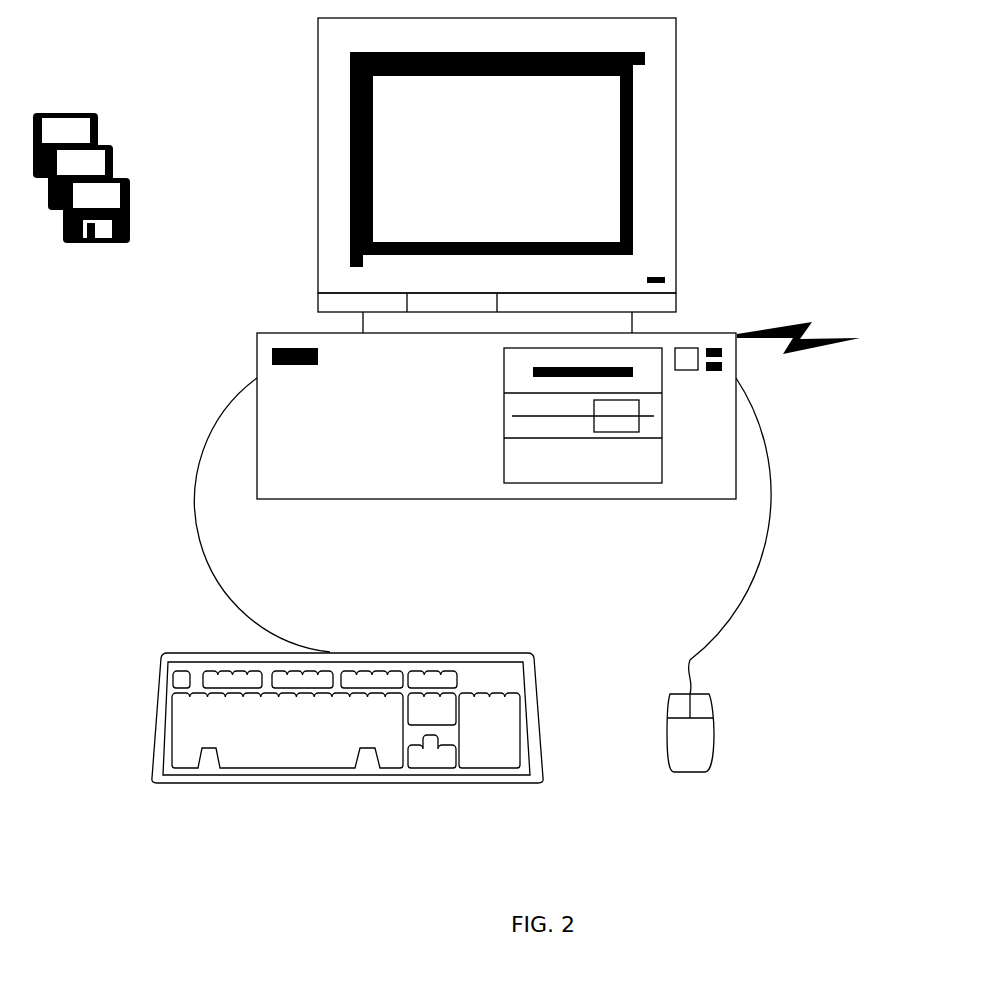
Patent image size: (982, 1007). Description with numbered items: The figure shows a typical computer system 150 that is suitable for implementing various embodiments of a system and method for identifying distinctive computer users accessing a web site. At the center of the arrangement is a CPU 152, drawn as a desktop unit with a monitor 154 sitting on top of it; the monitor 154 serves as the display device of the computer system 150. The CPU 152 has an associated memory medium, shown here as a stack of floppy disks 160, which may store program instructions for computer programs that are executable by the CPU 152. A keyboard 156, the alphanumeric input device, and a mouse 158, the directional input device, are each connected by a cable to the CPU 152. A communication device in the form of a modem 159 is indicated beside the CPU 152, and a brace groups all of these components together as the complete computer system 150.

The computer system 150 is at (862, 805).
The CPU 152 is at (370, 434).
The monitor 154 is at (477, 171).
The keyboard 156 is at (347, 599).
The mouse 158 is at (719, 592).
The modem 159 is at (798, 356).
The floppy disks 160 is at (81, 195).